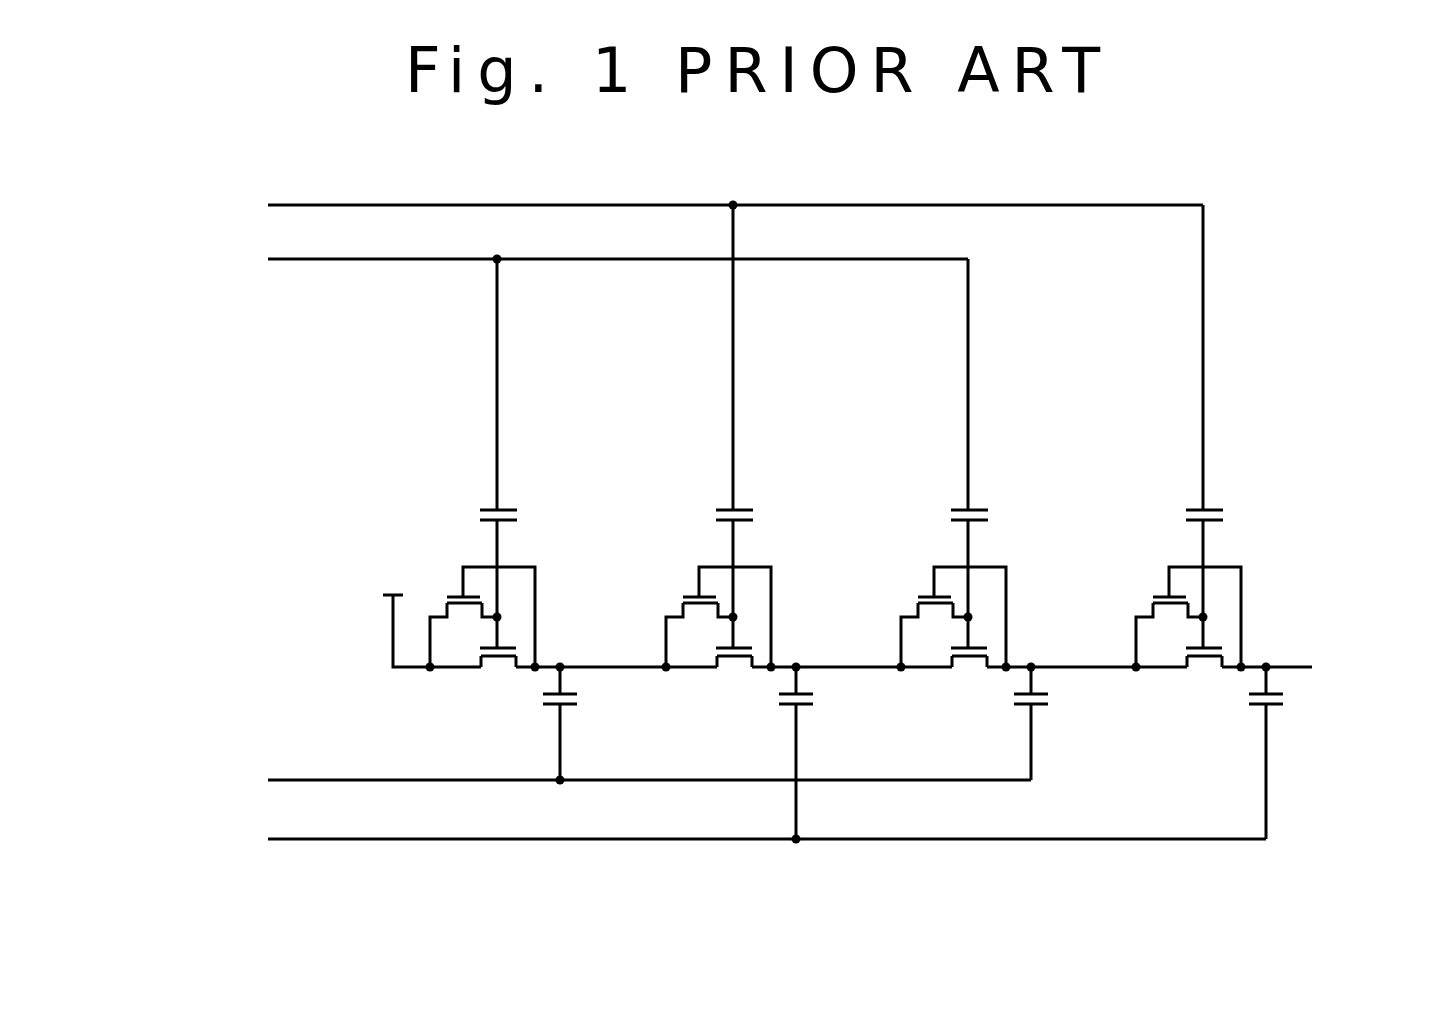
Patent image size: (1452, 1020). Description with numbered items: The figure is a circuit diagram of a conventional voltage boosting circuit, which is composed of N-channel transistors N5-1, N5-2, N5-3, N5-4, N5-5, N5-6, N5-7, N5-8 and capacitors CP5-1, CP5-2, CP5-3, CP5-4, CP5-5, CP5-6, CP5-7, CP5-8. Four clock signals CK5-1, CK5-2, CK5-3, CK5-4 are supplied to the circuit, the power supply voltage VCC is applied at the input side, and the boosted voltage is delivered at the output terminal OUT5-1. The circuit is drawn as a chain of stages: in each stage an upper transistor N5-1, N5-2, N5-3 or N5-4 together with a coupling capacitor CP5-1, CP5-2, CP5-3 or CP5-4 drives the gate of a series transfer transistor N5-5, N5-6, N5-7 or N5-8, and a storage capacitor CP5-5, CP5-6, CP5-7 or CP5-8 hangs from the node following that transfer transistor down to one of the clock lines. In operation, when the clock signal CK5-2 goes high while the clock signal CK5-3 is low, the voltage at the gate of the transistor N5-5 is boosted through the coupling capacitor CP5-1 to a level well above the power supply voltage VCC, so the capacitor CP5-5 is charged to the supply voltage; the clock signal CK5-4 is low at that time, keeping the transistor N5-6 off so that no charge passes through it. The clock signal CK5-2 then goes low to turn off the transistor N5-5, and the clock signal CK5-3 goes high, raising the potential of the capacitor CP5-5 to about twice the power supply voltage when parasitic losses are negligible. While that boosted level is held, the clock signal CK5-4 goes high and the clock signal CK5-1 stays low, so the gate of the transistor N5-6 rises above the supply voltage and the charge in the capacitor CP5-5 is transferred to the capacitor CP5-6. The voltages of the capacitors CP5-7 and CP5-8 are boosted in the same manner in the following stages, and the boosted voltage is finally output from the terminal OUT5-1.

The clock signal CK5-1 is at (725, 842).
The clock signal CK5-2 is at (576, 260).
The clock signal CK5-3 is at (608, 782).
The clock signal CK5-4 is at (694, 207).
The power supply voltage VCC is at (400, 616).
The output terminal OUT5-1 is at (1317, 668).
The coupling capacitor CP5-1 is at (503, 508).
The capacitor CP5-2 is at (739, 508).
The capacitor CP5-3 is at (974, 508).
The capacitor CP5-4 is at (1209, 508).
The capacitor CP5-5 is at (568, 707).
The capacitor CP5-6 is at (804, 707).
The capacitor CP5-7 is at (1039, 707).
The capacitor CP5-8 is at (1274, 707).
The N-channel transistor N5-1 is at (446, 596).
The N-channel transistor N5-2 is at (667, 616).
The N-channel transistor N5-3 is at (902, 616).
The N-channel transistor N5-4 is at (1137, 616).
The N-channel transistor N5-5 is at (502, 670).
The N-channel transistor N5-6 is at (738, 670).
The N-channel transistor N5-7 is at (973, 670).
The N-channel transistor N5-8 is at (1208, 670).